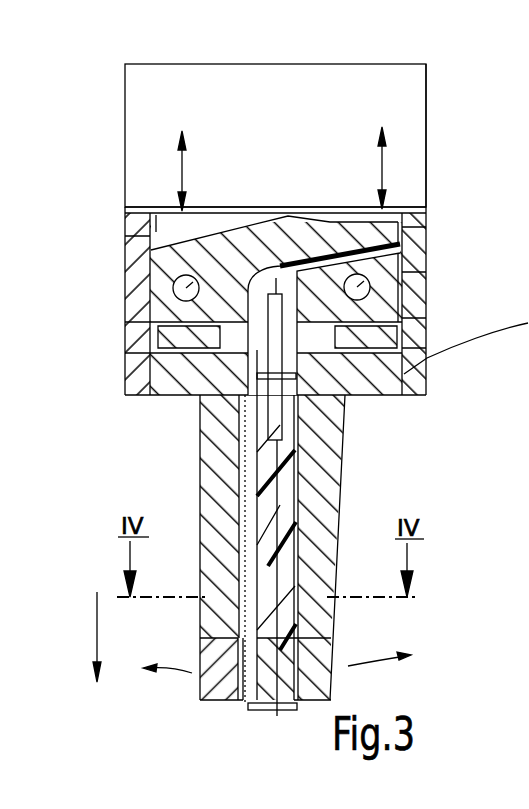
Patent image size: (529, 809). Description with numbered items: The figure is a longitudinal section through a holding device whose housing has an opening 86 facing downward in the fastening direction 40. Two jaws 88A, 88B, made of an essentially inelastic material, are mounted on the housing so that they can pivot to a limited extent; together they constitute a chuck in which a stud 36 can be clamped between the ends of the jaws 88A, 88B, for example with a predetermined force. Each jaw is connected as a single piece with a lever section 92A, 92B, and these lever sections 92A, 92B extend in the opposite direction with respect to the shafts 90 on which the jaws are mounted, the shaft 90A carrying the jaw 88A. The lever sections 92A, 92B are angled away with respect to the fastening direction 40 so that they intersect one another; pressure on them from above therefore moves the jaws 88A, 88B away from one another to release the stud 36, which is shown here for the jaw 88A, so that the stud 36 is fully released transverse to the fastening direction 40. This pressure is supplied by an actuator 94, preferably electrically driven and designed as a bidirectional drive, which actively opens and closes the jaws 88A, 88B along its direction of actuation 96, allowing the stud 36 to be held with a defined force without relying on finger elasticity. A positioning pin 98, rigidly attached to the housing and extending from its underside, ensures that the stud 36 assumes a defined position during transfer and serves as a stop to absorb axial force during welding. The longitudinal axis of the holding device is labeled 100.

The actuator 94 is at (406, 105).
The direction of actuation 96 is at (180, 167).
The lever section 92A is at (348, 221).
The lever section 92B is at (162, 207).
The shaft 90A is at (126, 292).
The seal 90 is at (403, 272).
The opening 86 is at (403, 396).
The jaw 88A is at (217, 458).
The jaw 88B is at (331, 451).
The positioning pin 98 is at (283, 621).
The longitudinal axis 100 is at (284, 634).
The fastening direction 40 is at (97, 636).
The stud 36 is at (265, 698).